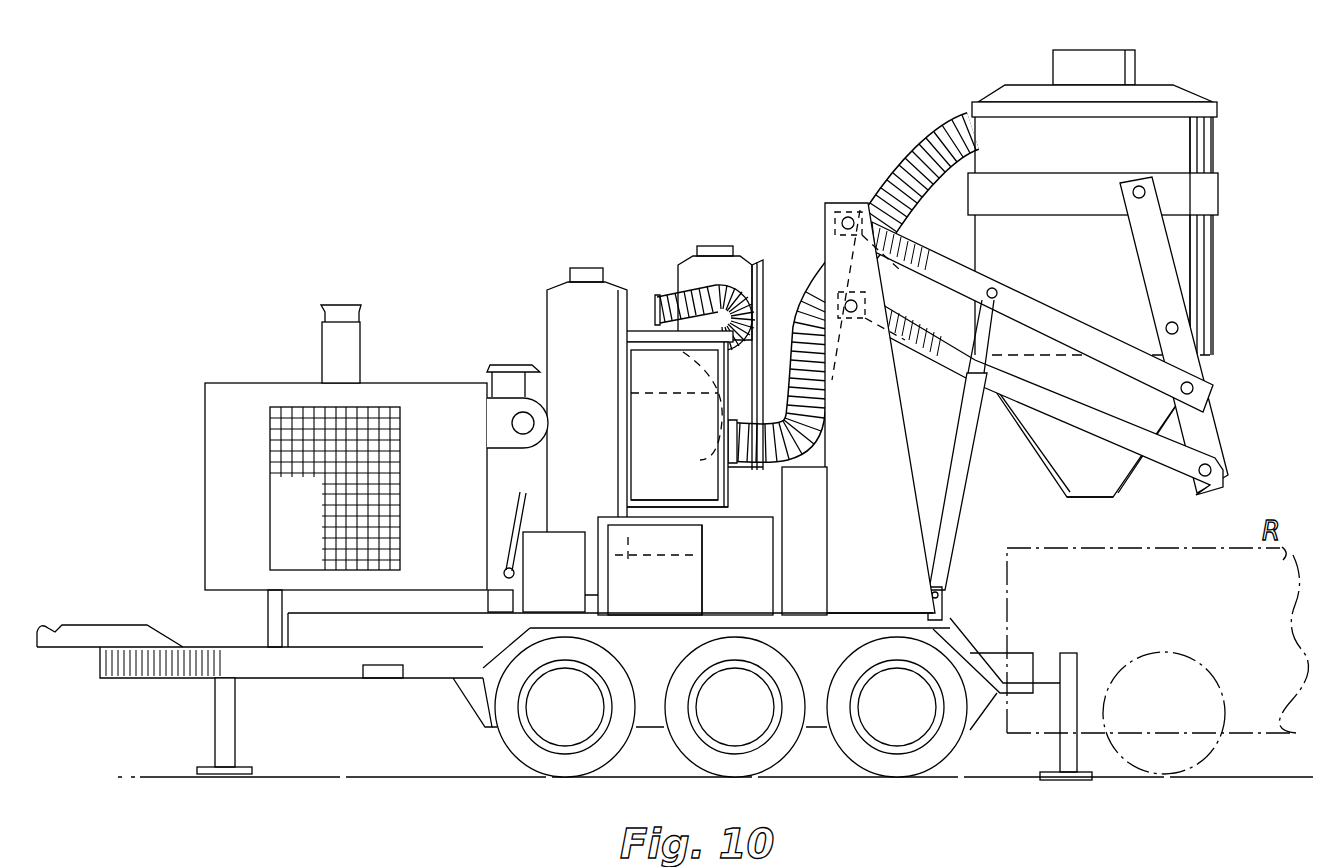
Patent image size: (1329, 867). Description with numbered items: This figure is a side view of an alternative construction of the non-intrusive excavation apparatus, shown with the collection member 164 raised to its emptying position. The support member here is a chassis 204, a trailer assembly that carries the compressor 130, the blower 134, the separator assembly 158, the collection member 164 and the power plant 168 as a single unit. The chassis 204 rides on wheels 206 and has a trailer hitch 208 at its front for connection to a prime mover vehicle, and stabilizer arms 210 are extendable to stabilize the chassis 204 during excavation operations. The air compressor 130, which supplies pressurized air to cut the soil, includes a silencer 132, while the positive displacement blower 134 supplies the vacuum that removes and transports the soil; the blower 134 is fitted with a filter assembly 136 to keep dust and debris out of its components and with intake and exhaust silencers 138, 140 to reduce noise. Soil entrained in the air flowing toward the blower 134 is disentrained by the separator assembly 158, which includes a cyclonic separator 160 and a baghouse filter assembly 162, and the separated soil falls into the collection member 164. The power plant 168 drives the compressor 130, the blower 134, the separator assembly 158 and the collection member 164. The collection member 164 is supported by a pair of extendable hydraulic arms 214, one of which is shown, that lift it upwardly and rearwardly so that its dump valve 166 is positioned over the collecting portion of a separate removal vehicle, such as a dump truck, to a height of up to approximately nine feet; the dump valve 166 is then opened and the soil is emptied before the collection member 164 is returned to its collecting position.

The air compressor 130 is at (663, 597).
The silencer 132 is at (662, 538).
The positive displacement blower 134 is at (685, 486).
The filter assembly 136 is at (680, 378).
The intake silencer 138 is at (595, 336).
The exhaust silencer 140 is at (775, 236).
The separator assembly 158 is at (1224, 150).
The cyclonic separator 160 is at (1196, 262).
The baghouse filter assembly 162 is at (1120, 156).
The collection member 164 is at (1023, 440).
The dump valve 166 is at (1115, 497).
The power plant 168 is at (470, 452).
The chassis 204 is at (345, 657).
The wheels 206 is at (697, 762).
The trailer hitch 208 is at (98, 632).
The stabilizer arms 210 is at (232, 720).
The extendable hydraulic arms 214 is at (1205, 424).